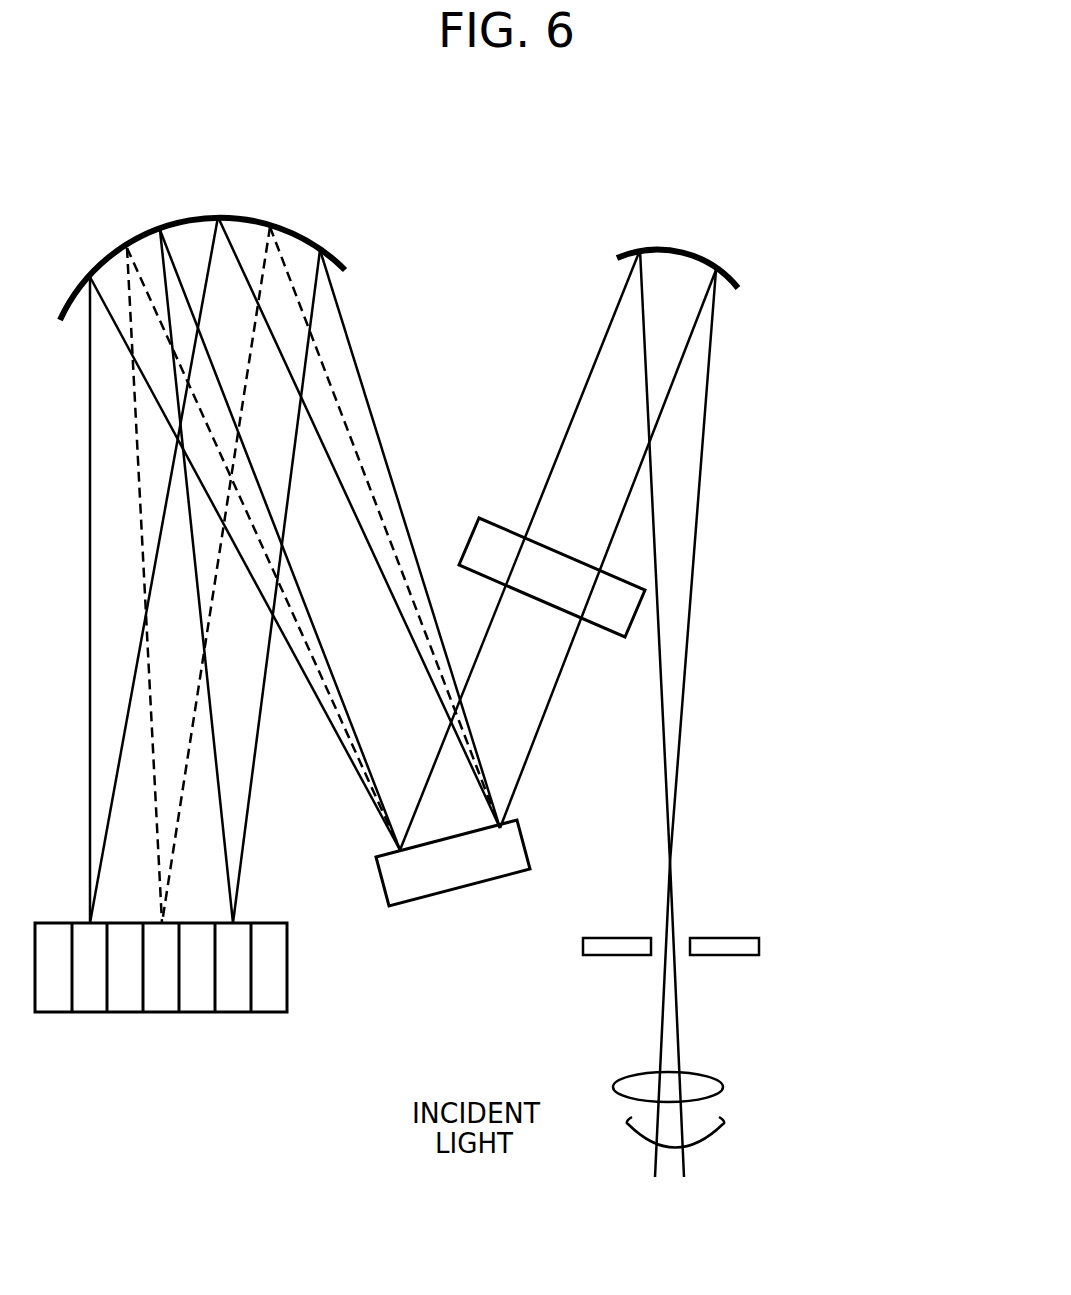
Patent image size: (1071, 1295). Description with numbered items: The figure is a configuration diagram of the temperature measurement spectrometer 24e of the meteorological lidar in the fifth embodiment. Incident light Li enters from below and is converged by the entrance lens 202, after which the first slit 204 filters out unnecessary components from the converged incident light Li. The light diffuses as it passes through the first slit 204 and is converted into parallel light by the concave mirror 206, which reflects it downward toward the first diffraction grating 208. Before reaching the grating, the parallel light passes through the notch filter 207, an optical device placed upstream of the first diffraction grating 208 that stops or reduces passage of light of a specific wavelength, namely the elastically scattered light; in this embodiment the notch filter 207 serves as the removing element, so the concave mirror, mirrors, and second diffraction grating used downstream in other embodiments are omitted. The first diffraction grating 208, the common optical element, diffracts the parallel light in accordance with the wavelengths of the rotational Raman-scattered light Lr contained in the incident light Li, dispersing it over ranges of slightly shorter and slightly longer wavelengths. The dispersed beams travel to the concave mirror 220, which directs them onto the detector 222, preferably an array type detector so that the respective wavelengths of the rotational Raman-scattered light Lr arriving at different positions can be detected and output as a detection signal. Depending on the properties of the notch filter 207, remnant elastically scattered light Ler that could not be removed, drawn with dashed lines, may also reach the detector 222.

The concave mirror 220 is at (197, 214).
The concave mirror 206 is at (675, 256).
The notch filter 207 is at (648, 586).
The first diffraction grating 208 is at (428, 897).
The first slit 204 is at (743, 937).
The entrance lens 202 is at (690, 1075).
The detector 222 is at (108, 1013).
The spectrometer 24e is at (418, 1094).
The rotational Raman-scattered light Lr is at (363, 392).
The remnant elastically scattered light Ler is at (362, 467).
The incident light Li is at (628, 1124).